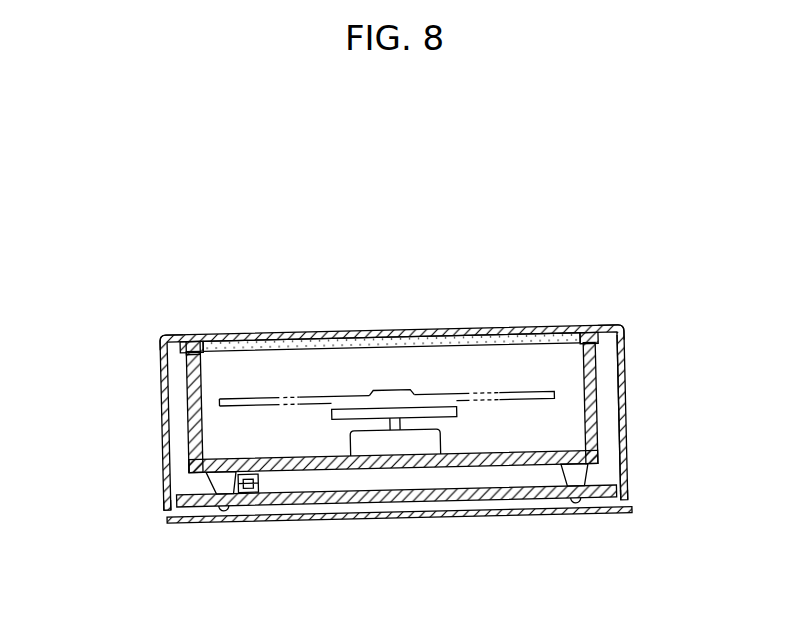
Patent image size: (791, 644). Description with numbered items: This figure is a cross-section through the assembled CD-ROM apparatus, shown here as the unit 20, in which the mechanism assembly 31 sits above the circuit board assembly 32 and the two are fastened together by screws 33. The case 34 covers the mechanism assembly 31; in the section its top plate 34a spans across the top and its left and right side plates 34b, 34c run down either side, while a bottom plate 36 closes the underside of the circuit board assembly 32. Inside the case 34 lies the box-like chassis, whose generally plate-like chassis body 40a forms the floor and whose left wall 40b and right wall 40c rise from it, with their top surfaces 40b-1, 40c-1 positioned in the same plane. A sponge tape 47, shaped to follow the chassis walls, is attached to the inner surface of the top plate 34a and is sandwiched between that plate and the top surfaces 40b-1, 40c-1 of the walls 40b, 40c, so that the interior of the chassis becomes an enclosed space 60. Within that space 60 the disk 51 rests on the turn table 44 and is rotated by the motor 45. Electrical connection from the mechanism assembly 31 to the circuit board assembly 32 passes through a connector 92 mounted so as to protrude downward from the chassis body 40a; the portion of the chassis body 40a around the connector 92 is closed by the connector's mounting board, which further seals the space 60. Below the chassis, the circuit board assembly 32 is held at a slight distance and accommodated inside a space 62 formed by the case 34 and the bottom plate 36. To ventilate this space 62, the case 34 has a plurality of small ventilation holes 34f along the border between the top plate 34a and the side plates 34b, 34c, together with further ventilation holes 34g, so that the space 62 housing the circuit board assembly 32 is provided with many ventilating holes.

The electronic device unit 20 is at (470, 217).
The mechanism assembly 31 is at (606, 373).
The circuit board assembly 32 is at (388, 497).
The screws 33 is at (218, 512).
The case 34 is at (572, 329).
The top plate 34a is at (338, 333).
The left side plate 34b is at (163, 432).
The right side plate 34c is at (628, 425).
The ventilation holes 34f is at (160, 338).
The ventilation holes 34g is at (162, 505).
The bottom plate 36 is at (567, 513).
The chassis body 40a is at (305, 465).
The wall 40b is at (195, 382).
The top surface 40b-1 is at (192, 338).
The wall 40c is at (628, 398).
The top surface 40c-1 is at (593, 333).
The turn table 44 is at (443, 408).
The motor 45 is at (430, 445).
The sponge tape 47 is at (200, 338).
The disk 51 is at (493, 393).
The enclosed space 60 is at (291, 372).
The space 62 is at (182, 467).
The connector 92 is at (257, 477).